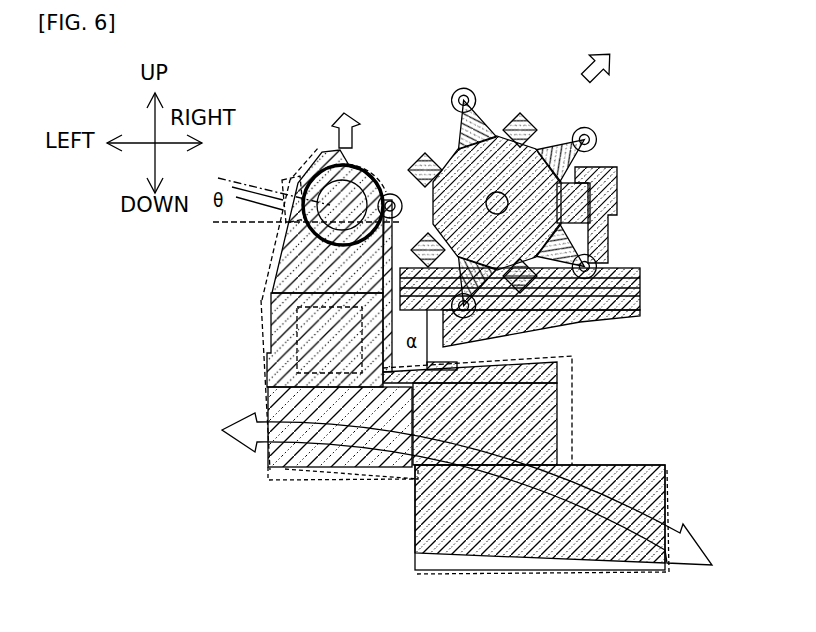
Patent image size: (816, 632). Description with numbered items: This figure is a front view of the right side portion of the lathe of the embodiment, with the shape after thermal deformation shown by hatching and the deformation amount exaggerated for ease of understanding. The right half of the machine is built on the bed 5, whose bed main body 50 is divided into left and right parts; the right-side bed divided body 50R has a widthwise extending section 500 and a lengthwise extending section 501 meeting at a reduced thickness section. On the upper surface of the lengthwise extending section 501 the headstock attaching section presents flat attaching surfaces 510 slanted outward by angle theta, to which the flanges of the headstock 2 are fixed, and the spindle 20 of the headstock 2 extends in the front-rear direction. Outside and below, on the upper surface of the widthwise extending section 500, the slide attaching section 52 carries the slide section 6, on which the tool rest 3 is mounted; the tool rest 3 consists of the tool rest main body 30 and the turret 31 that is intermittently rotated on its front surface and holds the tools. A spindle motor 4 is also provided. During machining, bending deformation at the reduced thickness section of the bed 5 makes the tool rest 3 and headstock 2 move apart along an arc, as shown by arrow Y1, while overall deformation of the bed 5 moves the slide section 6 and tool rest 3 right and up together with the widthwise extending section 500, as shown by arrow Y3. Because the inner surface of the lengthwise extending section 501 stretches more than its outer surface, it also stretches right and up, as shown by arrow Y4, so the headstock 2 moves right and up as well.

The headstock 2 is at (352, 176).
The spindle 20 is at (335, 195).
The tool rest 3 is at (432, 140).
The tool rest main body 30 is at (588, 176).
The turret 31 is at (545, 127).
The spindle motor 4 is at (290, 342).
The bed 5 is at (625, 466).
The bed main body 50 is at (345, 468).
The bed divided body 50R is at (395, 470).
The widthwise extending section 500 is at (548, 397).
The lengthwise extending section 501 is at (290, 268).
The attaching surface 510 is at (312, 178).
The slide attaching section 52 is at (560, 326).
The slide section 6 is at (615, 268).
The arrow Y1 is at (242, 425).
The arrow Y3 is at (582, 68).
The arrow Y4 is at (343, 120).